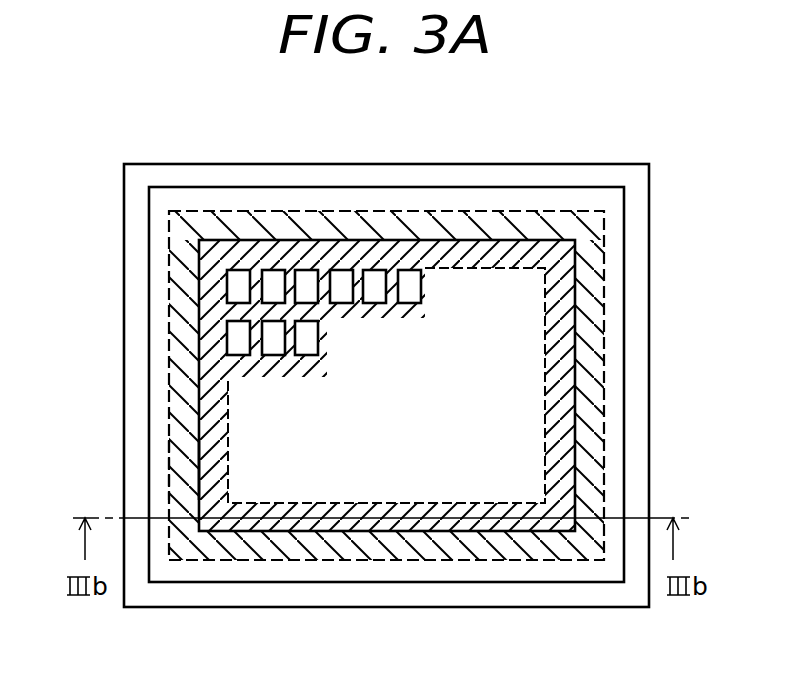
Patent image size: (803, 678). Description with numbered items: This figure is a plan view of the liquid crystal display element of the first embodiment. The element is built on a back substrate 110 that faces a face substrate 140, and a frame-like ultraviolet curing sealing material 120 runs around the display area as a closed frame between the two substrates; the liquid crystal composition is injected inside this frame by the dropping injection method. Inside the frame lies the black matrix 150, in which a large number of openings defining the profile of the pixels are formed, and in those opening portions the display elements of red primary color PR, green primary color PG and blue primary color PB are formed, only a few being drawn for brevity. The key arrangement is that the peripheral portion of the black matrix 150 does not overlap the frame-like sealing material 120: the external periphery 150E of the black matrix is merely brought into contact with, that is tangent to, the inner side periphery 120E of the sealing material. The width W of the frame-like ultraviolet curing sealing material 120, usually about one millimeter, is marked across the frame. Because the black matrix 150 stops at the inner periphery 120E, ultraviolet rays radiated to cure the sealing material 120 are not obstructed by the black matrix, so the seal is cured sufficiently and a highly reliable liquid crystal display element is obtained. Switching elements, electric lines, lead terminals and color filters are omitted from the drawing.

The back substrate 110 is at (640, 248).
The face substrate 140 is at (612, 220).
The frame-like ultraviolet curing sealing material 120 is at (498, 552).
The black matrix 150 is at (264, 522).
The inner side periphery of the frame-like ultraviolet curing sealing material 120E is at (199, 463).
The external periphery of the black matrix 150E is at (183, 467).
The display element of red primary color PR is at (237, 278).
The display element of green primary color PG is at (272, 278).
The display element of blue primary color PB is at (307, 278).
The width of the frame-like ultraviolet curing sealing material W is at (520, 388).